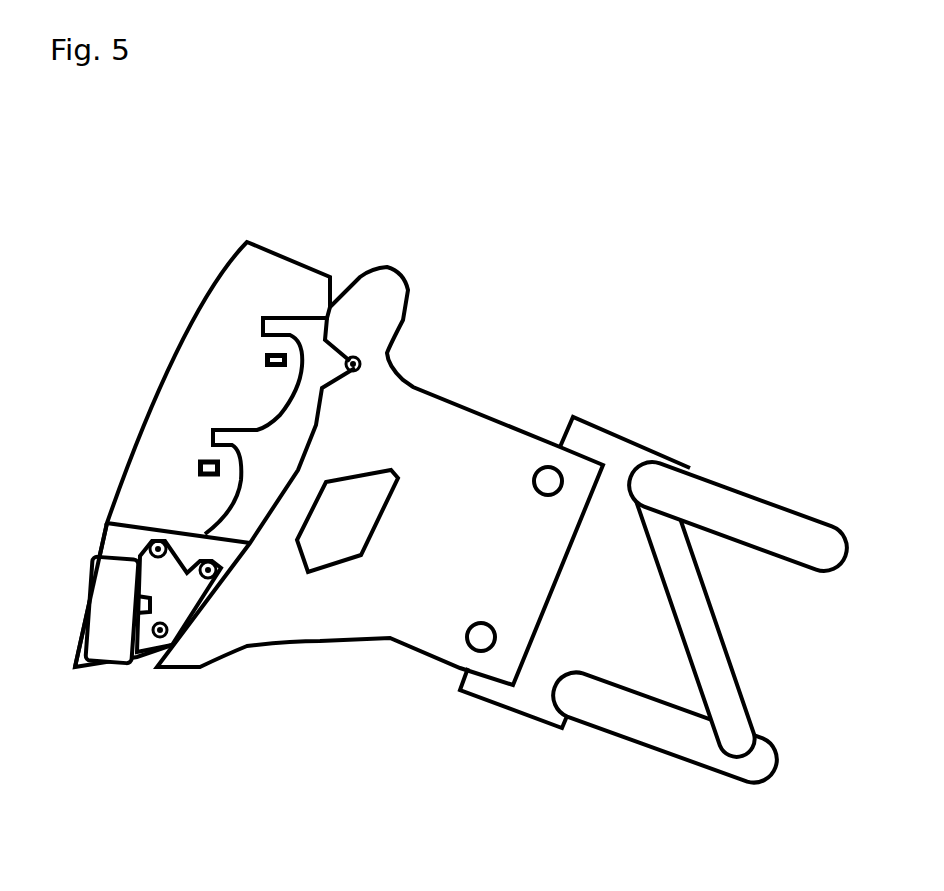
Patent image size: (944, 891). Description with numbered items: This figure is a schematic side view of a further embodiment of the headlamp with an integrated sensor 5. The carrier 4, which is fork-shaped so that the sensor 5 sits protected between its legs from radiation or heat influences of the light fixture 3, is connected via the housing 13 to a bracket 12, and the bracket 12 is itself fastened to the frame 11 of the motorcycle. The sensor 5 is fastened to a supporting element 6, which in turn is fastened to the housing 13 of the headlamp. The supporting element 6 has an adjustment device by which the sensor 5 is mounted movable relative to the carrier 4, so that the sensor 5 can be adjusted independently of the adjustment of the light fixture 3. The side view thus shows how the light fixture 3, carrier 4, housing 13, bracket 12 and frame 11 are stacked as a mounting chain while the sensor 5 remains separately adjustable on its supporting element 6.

The light fixture 3 is at (277, 352).
The carrier 4 is at (225, 327).
The sensor 5 is at (110, 557).
The supporting element 6 is at (177, 603).
The frame 11 is at (627, 437).
The bracket 12 is at (480, 410).
The housing 13 is at (335, 360).